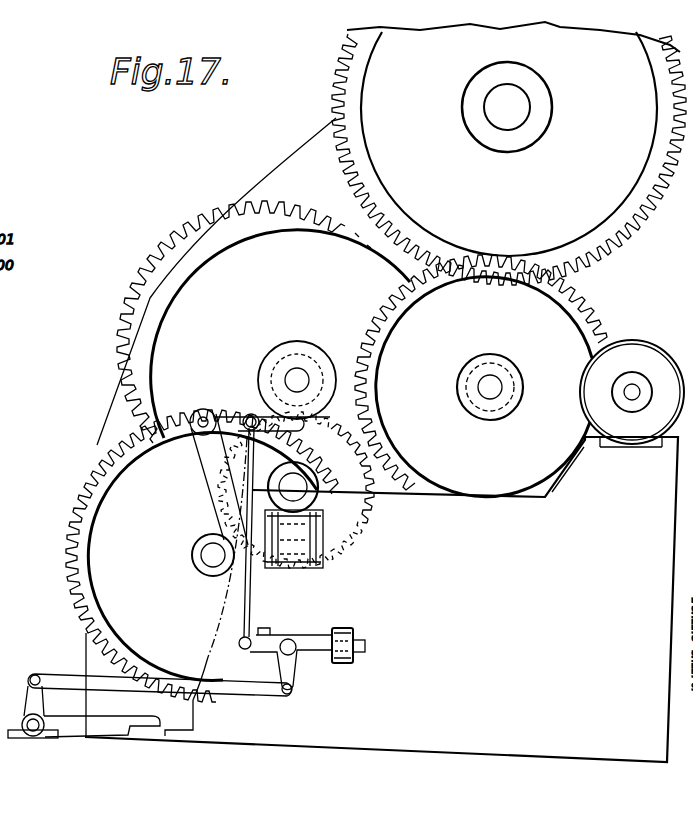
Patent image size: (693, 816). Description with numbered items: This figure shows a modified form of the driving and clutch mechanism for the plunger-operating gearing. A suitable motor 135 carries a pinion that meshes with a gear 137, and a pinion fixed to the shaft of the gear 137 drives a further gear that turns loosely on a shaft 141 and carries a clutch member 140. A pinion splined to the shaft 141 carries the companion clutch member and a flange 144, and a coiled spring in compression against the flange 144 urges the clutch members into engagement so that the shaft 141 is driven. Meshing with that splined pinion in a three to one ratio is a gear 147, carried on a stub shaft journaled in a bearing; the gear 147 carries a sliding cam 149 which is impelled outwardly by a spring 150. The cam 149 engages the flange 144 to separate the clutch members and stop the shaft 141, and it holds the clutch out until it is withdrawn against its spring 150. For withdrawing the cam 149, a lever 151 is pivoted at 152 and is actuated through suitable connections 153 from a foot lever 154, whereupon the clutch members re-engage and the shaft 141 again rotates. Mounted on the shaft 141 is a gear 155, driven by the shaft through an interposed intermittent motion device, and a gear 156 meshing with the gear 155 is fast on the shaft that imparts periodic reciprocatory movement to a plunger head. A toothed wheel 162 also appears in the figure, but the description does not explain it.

The motor 135 is at (648, 350).
The gear 137 is at (588, 297).
The clutch member 140 is at (330, 389).
The shaft 141 is at (312, 355).
The flange 144 is at (264, 365).
The gear 147 is at (328, 566).
The sliding cam 149 is at (292, 572).
The spring 150 is at (361, 533).
The lever 151 is at (233, 413).
The pivot 152 is at (200, 434).
The connections 153 is at (253, 606).
The foot lever 154 is at (150, 718).
The gear 155 is at (144, 302).
The gear 156 is at (340, 96).
The gear 162 is at (75, 538).